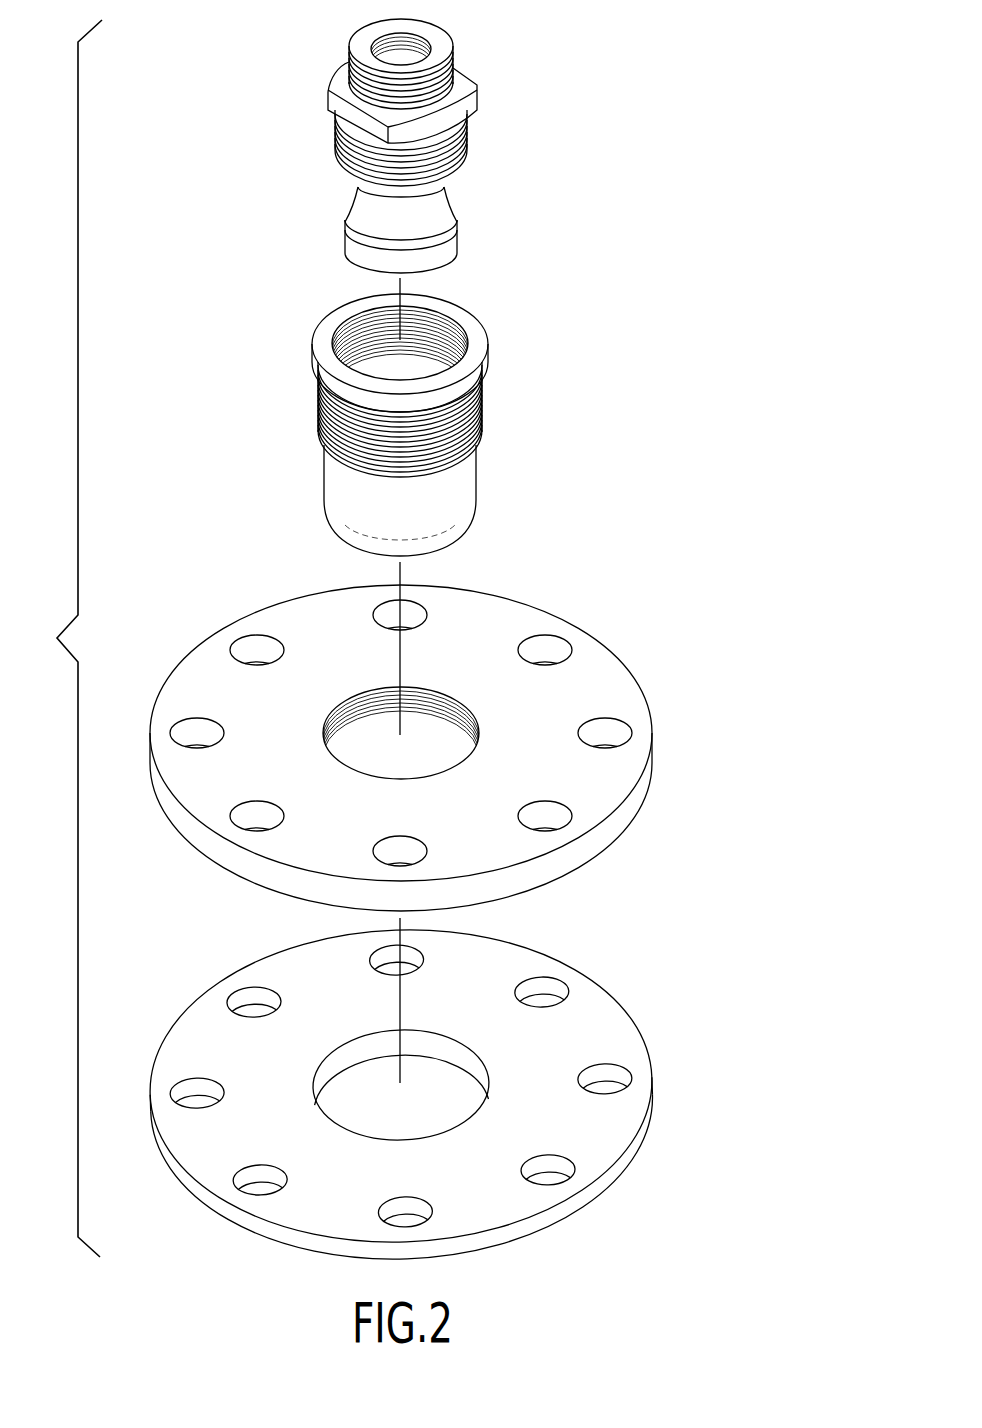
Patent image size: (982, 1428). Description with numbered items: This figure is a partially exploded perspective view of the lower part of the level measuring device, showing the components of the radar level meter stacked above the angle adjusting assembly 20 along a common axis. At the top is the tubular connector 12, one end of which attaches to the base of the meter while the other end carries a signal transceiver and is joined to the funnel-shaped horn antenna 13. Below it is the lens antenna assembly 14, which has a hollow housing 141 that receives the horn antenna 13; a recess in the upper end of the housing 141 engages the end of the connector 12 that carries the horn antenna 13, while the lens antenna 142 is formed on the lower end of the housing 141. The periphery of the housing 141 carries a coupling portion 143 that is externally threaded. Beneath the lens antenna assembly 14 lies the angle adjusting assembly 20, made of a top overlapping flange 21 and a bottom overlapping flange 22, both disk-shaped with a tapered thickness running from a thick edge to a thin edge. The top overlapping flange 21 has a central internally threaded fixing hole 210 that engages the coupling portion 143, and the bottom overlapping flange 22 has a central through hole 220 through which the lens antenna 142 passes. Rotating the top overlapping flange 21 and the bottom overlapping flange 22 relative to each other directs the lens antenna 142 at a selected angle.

The connector 12 is at (335, 83).
The horn antenna 13 is at (358, 213).
The lens antenna assembly 14 is at (419, 425).
The housing 141 is at (320, 343).
The lens antenna 142 is at (343, 490).
The coupling portion 143 is at (333, 427).
The angle adjusting assembly 20 is at (462, 926).
The top overlapping flange 21 is at (376, 748).
The fixing hole 210 is at (433, 707).
The bottom overlapping flange 22 is at (383, 1094).
The through hole 220 is at (452, 1058).